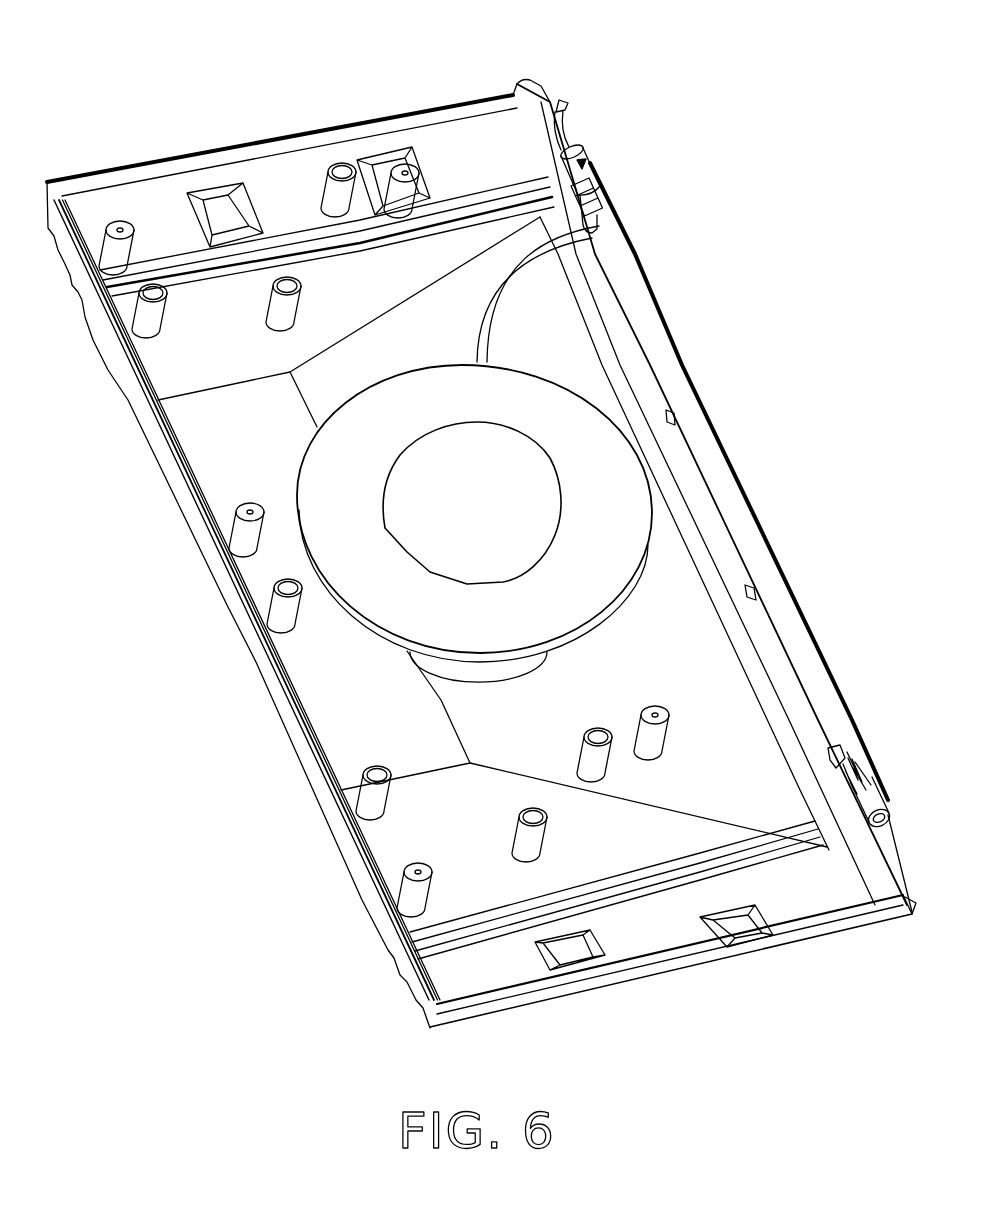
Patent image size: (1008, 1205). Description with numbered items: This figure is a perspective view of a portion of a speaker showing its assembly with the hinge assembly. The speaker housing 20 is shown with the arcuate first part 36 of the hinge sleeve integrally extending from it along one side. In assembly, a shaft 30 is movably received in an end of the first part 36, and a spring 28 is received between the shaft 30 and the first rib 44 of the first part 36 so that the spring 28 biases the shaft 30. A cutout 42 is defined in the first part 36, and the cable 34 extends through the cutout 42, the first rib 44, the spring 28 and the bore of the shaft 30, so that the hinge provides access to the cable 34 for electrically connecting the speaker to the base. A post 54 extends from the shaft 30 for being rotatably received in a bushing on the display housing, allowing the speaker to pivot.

The speaker housing 20 is at (680, 630).
The spring 28 is at (600, 192).
The shaft 30 is at (600, 178).
The cable 34 is at (553, 95).
The first part 36 is at (665, 347).
The cutout 42 is at (598, 238).
The first rib 44 is at (607, 208).
The post 54 is at (583, 160).